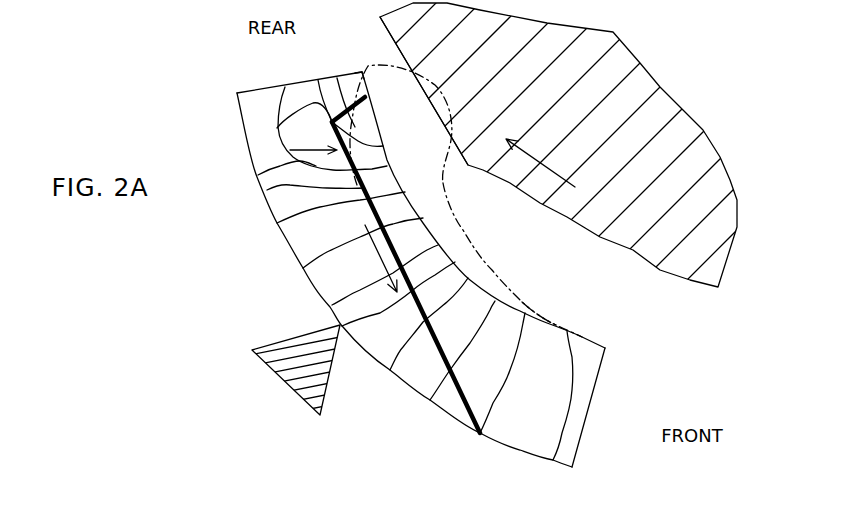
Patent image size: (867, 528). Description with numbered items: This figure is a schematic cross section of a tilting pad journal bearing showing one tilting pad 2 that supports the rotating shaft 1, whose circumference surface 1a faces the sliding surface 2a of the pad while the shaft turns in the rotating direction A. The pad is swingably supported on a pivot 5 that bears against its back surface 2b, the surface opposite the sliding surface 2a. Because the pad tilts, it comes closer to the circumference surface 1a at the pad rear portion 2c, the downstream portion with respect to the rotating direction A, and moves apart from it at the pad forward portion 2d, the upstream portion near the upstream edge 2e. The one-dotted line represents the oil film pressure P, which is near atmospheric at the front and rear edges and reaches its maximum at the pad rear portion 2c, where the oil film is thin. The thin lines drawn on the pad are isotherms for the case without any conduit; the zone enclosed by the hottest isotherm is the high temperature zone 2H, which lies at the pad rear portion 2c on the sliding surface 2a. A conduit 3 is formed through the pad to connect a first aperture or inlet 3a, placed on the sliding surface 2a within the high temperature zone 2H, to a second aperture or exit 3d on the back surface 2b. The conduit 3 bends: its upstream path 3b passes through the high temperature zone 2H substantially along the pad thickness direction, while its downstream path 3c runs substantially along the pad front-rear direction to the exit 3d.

The rotating shaft 1 is at (503, 180).
The rotating shaft circumference surface 1a is at (385, 27).
The tilting pad 2 is at (430, 250).
The high temperature zone 2H is at (363, 70).
The sliding surface 2a is at (423, 218).
The back surface 2b is at (289, 245).
The pad rear portion 2c is at (380, 133).
The pad forward portion 2d is at (540, 317).
The upstream edge 2e is at (606, 348).
The conduit 3 is at (345, 286).
The first aperture (inlet) 3a is at (365, 97).
The upstream path 3b is at (277, 128).
The downstream path 3c is at (267, 190).
The second aperture (exit) 3d is at (480, 433).
The pivot 5 is at (277, 378).
The oil film pressure P is at (483, 260).
The rotating direction A is at (540, 163).